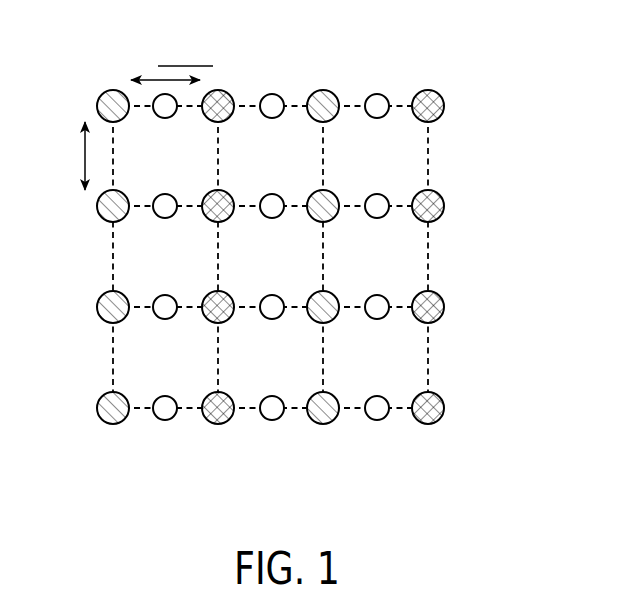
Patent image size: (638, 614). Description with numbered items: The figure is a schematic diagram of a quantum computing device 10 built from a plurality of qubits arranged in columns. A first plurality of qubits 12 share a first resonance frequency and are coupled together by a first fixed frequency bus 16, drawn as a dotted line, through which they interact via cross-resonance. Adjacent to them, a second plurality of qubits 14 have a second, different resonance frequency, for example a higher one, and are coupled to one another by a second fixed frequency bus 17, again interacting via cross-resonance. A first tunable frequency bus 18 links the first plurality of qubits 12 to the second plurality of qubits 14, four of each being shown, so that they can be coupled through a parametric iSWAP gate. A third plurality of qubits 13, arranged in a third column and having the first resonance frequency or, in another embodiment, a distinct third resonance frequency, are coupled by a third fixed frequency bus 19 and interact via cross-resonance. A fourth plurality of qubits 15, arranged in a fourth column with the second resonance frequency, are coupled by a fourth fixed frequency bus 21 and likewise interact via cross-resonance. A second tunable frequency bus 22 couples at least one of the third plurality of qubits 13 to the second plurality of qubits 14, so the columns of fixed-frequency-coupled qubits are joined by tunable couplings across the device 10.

The quantum computing device 10 is at (503, 93).
The first plurality of qubits 12 is at (100, 420).
The third plurality of qubits 13 is at (312, 424).
The second plurality of qubits 14 is at (205, 420).
The fourth plurality of qubits 15 is at (415, 422).
The first fixed frequency bus 16 is at (111, 268).
The second fixed frequency bus 17 is at (216, 163).
The first tunable frequency bus 18 is at (277, 93).
The third fixed frequency bus 19 is at (321, 175).
The fourth fixed frequency bus 21 is at (426, 175).
The second tunable frequency bus 22 is at (265, 419).